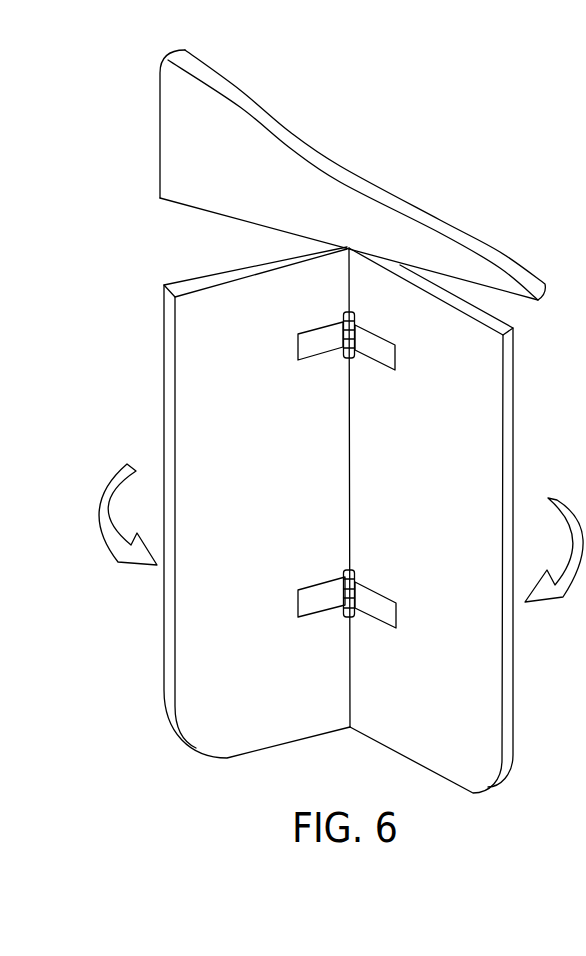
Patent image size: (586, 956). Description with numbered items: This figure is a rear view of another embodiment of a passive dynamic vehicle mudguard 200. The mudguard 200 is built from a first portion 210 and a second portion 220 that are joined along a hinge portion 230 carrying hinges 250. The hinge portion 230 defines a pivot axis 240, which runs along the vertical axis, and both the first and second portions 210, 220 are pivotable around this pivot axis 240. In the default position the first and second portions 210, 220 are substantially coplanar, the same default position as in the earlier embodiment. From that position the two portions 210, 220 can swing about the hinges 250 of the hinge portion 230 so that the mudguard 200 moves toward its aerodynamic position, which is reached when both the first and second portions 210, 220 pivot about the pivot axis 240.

The dynamic vehicle mudguard 200 is at (465, 133).
The first portion 210 is at (165, 413).
The second portion 220 is at (504, 455).
The hinge portion 230 is at (355, 452).
The pivot axis 240 is at (350, 667).
The hinges 250 is at (381, 323).